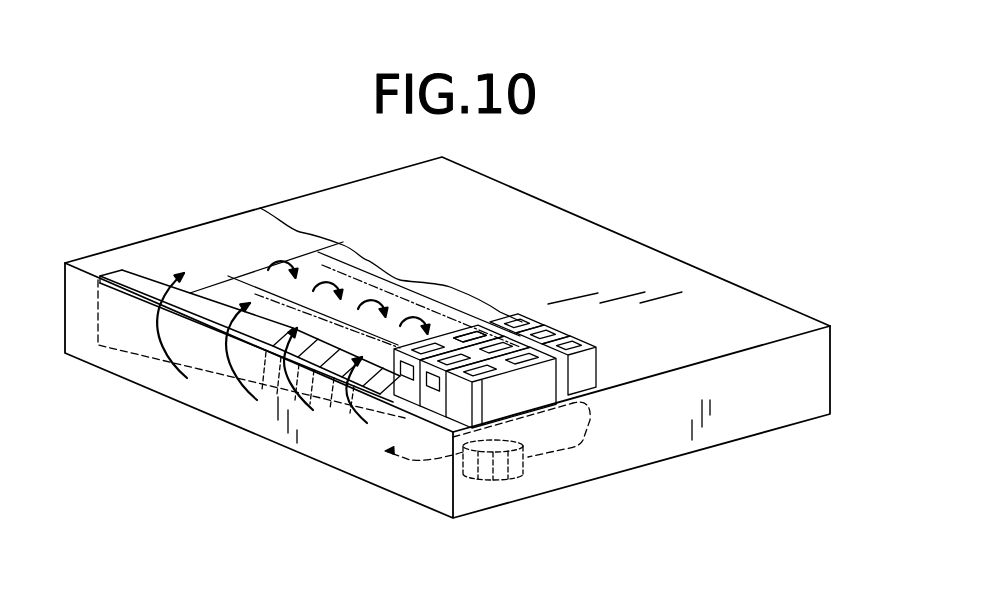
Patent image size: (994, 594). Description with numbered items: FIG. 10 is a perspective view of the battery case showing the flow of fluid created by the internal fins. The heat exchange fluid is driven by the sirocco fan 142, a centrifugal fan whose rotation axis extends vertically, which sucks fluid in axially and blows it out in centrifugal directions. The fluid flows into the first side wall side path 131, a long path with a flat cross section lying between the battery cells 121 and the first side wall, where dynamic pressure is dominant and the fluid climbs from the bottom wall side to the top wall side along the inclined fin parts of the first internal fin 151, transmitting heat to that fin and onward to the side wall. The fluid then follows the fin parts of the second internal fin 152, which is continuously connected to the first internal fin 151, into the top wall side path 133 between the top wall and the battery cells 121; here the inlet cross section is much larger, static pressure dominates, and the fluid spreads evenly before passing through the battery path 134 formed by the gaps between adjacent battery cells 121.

The battery cell 121 is at (447, 340).
The first side wall side path 131 is at (354, 436).
The top wall side path 133 is at (160, 258).
The battery path 134 is at (465, 338).
The sirocco fan 142 is at (505, 482).
The first internal fin 151 is at (212, 368).
The second internal fin 152 is at (208, 295).